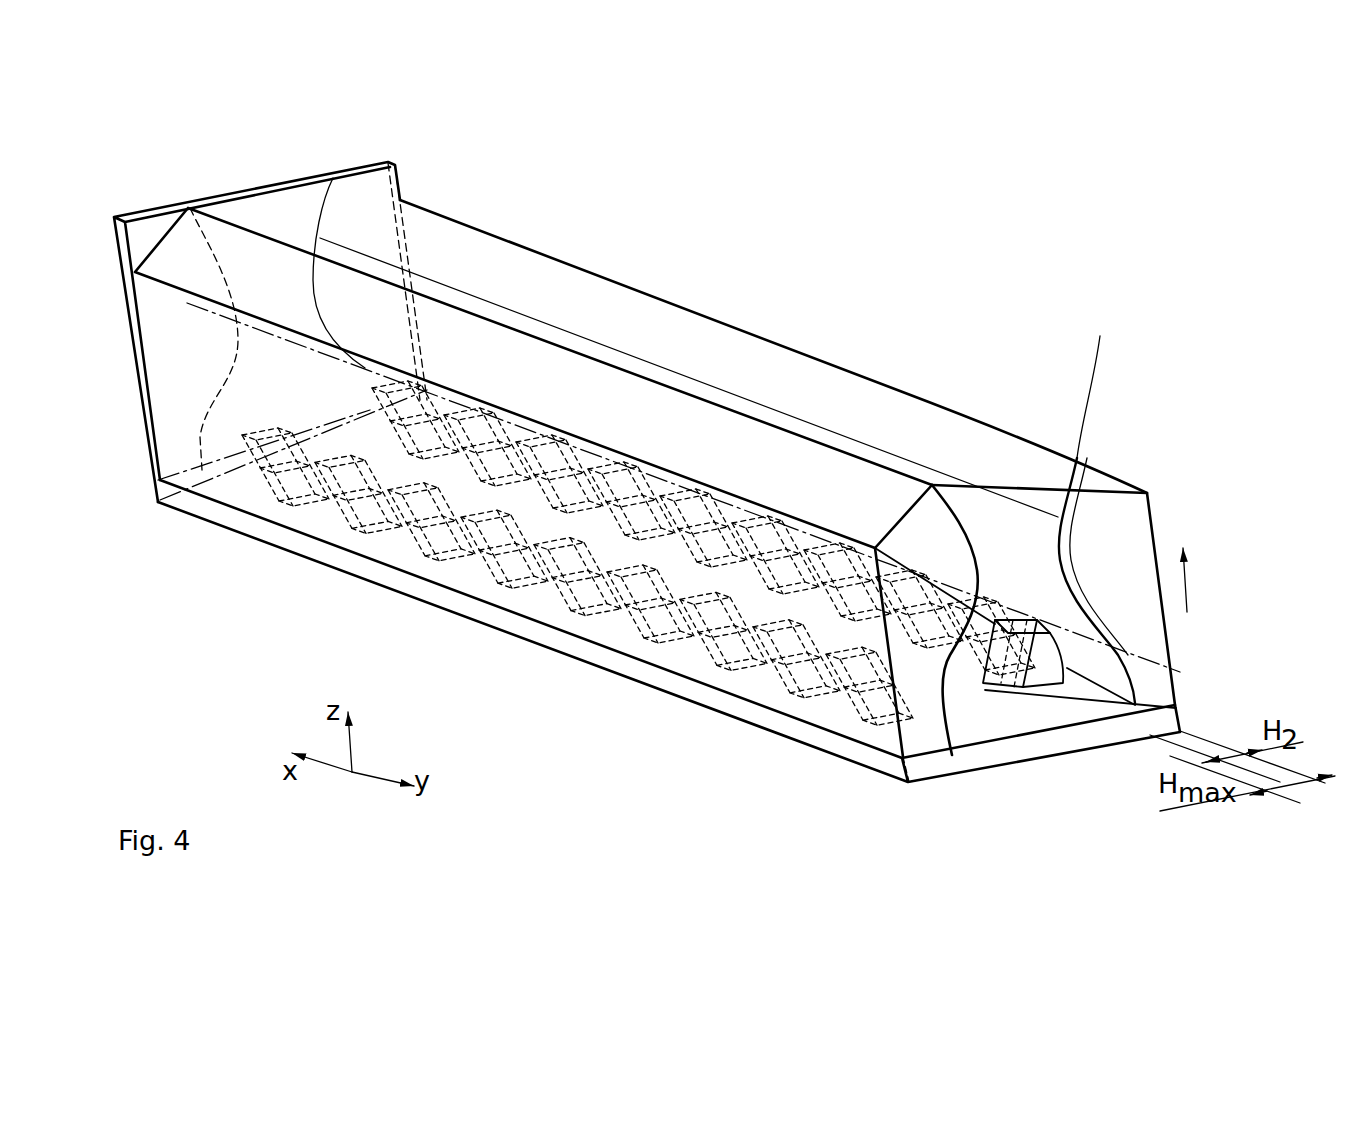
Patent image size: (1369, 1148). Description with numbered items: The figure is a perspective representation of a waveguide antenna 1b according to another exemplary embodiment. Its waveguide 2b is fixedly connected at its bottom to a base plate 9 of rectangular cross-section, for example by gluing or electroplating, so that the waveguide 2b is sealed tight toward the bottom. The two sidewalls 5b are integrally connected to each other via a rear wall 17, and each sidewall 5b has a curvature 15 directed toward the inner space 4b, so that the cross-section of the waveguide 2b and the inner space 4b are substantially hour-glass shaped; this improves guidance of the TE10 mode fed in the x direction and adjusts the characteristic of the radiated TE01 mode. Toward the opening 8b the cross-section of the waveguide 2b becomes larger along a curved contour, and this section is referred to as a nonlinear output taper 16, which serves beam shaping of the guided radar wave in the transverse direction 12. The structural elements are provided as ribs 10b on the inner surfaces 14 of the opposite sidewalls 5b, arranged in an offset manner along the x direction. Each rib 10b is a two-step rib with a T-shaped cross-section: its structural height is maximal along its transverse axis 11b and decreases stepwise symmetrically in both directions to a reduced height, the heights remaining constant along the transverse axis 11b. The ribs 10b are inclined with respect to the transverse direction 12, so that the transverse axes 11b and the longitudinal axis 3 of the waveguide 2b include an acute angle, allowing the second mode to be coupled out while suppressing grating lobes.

The waveguide antenna 1b is at (762, 273).
The waveguide 2b is at (648, 290).
The longitudinal axis 3 is at (1133, 653).
The inner space 4b is at (972, 705).
The sidewalls 5b is at (1147, 493).
The opening 8b is at (810, 422).
The base plate 9 is at (565, 655).
The ribs 10b is at (1036, 672).
The transverse axis 11b is at (1097, 503).
The transverse direction 12 is at (1190, 580).
The inner surfaces 14 is at (1137, 697).
The curvature 15 is at (963, 574).
The nonlinear output taper 16 is at (957, 503).
The rear wall 17 is at (280, 200).